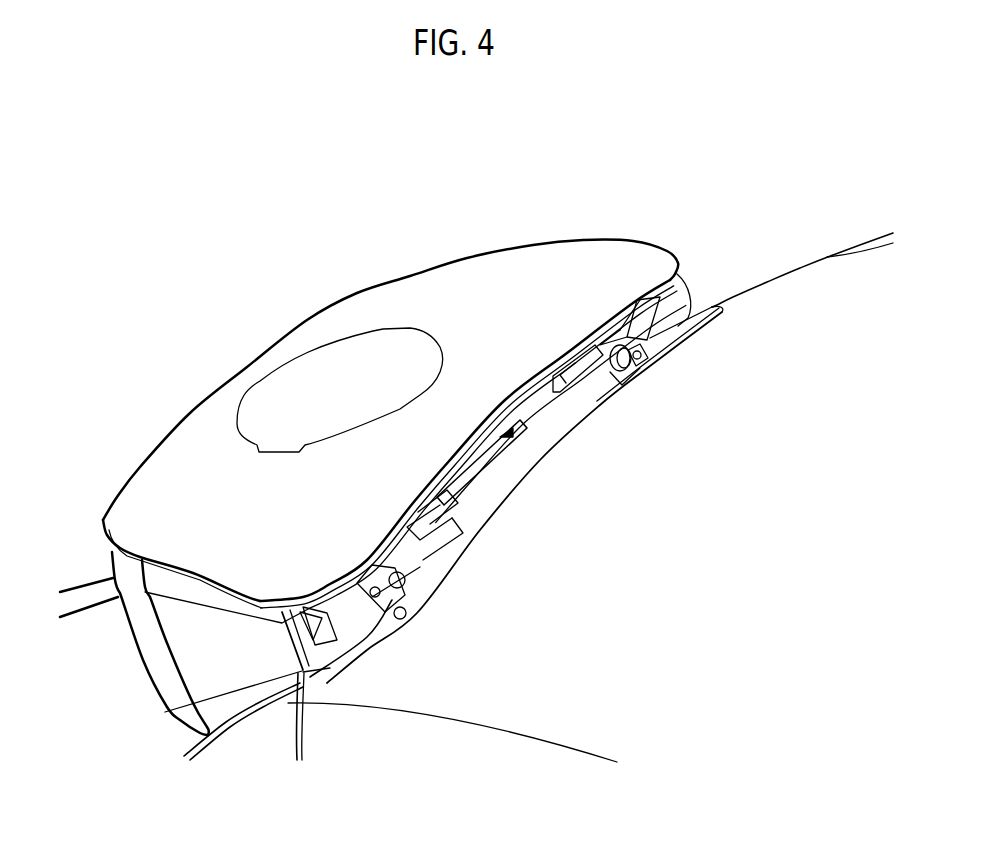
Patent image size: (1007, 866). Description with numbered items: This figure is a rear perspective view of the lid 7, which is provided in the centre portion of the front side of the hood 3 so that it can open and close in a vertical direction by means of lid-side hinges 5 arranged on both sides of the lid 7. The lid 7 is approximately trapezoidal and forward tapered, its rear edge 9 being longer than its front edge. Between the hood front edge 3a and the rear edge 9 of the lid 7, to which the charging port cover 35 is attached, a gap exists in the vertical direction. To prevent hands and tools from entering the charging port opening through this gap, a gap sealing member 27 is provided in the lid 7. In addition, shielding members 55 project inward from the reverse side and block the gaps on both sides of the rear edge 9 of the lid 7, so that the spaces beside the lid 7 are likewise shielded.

The hood 3 is at (663, 535).
The hood front edge 3a is at (545, 455).
The lid-side hinge 5 is at (630, 387).
The lid 7 is at (485, 288).
The rear edge 9 is at (565, 355).
The gap sealing member 27 is at (480, 468).
The charging port cover 35 is at (200, 652).
The shielding member 55 is at (662, 315).